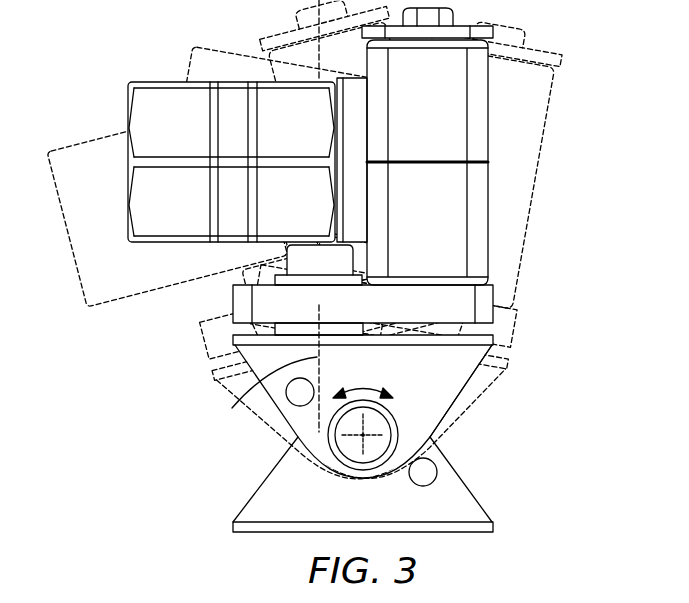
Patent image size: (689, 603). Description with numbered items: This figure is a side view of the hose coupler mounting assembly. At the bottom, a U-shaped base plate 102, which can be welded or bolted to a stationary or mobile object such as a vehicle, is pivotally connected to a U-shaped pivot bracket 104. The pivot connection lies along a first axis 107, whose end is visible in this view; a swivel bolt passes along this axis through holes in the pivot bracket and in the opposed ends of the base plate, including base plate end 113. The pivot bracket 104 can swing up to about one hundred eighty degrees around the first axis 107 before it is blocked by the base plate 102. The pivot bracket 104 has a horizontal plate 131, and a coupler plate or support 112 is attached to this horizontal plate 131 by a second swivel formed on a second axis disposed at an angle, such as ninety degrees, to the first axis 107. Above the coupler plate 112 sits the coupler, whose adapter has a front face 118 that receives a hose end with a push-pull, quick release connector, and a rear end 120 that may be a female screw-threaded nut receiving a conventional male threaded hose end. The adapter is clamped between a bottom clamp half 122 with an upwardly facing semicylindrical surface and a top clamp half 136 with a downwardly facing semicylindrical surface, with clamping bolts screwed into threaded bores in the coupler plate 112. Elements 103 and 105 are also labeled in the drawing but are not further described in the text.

The base plate 102 is at (267, 505).
The connector block 103 is at (313, 257).
The pivot bracket 104 is at (448, 379).
The arcuate slot 105 is at (234, 407).
The first axis 107 is at (362, 434).
The coupler plate 112 is at (415, 302).
The opposed end of base plate 113 is at (428, 414).
The front face 118 is at (421, 142).
The rear end 120 is at (348, 52).
The bottom clamp half 122 is at (449, 215).
The horizontal plate 131 is at (492, 346).
The top clamp half 136 is at (448, 132).